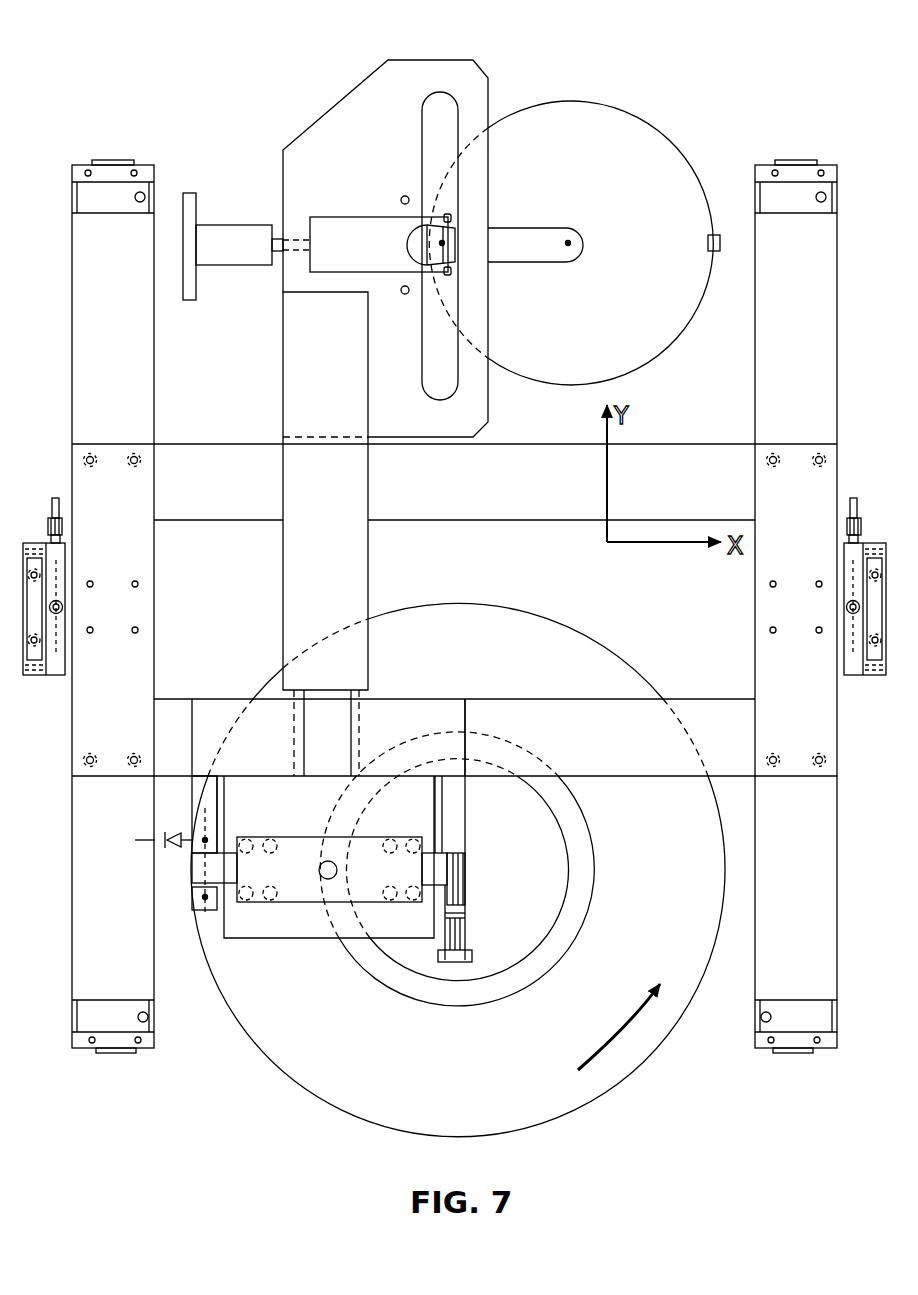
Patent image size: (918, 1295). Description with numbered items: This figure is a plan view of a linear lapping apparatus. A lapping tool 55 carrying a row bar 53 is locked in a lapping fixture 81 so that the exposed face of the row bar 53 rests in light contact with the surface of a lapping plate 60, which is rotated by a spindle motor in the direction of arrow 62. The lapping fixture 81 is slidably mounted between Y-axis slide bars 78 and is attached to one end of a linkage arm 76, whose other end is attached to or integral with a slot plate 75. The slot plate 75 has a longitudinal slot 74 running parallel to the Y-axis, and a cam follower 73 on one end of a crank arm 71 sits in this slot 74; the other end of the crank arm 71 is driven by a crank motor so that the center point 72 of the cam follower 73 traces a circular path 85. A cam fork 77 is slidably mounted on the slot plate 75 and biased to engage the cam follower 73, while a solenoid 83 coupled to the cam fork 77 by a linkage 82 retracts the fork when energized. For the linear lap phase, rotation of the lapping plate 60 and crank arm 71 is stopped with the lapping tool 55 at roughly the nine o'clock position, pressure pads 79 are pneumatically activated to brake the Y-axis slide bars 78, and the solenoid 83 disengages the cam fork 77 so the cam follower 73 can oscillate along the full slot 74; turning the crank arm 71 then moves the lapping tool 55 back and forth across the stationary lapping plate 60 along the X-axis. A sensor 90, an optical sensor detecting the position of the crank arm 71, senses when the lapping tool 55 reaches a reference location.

The row bar 53 is at (290, 855).
The lapping tool 55 is at (265, 930).
The lapping plate 60 is at (616, 1086).
The arrow 62 is at (630, 1030).
The crank arm 71 is at (587, 257).
The center point 72 is at (444, 244).
The cam follower 73 is at (458, 222).
The longitudinal slot 74 is at (450, 92).
The slot plate 75 is at (386, 118).
The linkage arm 76 is at (368, 560).
The cam fork 77 is at (392, 240).
The Y-axis slide bars 78 is at (154, 377).
The pressure pads 79 is at (40, 679).
The lapping fixture 81 is at (417, 713).
The linkage 82 is at (302, 276).
The solenoid 83 is at (232, 265).
The circular path 85 is at (629, 124).
The sensor 90 is at (708, 243).